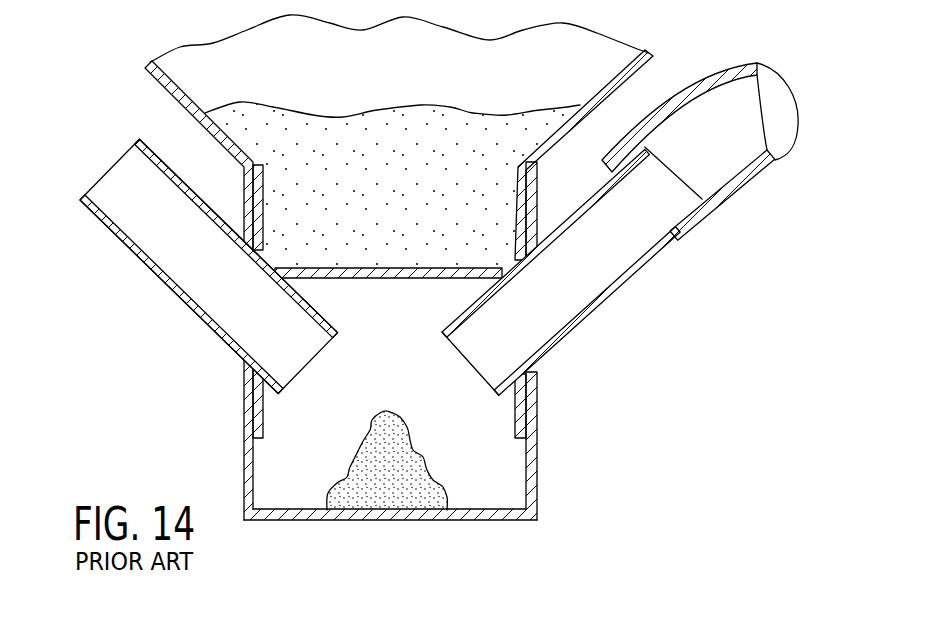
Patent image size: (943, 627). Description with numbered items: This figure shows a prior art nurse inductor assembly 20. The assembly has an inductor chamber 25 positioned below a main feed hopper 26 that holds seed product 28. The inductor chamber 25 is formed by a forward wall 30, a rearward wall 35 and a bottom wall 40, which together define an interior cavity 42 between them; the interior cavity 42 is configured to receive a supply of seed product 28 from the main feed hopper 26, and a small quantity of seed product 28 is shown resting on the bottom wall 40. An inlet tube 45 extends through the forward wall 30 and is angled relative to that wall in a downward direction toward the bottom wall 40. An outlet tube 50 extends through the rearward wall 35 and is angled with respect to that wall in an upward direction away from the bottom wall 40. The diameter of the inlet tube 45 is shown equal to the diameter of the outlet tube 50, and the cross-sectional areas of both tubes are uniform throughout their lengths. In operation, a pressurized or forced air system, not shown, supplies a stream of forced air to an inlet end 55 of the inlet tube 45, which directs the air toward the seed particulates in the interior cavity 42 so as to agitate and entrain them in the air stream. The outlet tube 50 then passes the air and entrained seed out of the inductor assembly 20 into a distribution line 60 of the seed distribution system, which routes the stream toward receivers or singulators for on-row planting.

The nurse inductor assembly 20 is at (688, 70).
The inductor chamber 25 is at (476, 528).
The main feed hopper 26 is at (163, 88).
The seed product 28 is at (407, 190).
The forward wall 30 is at (240, 438).
The rearward wall 35 is at (537, 487).
The bottom wall 40 is at (390, 521).
The interior cavity 42 is at (487, 430).
The inlet tube 45 is at (180, 304).
The outlet tube 50 is at (606, 297).
The inlet end 55 is at (100, 177).
The distribution line 60 is at (763, 167).